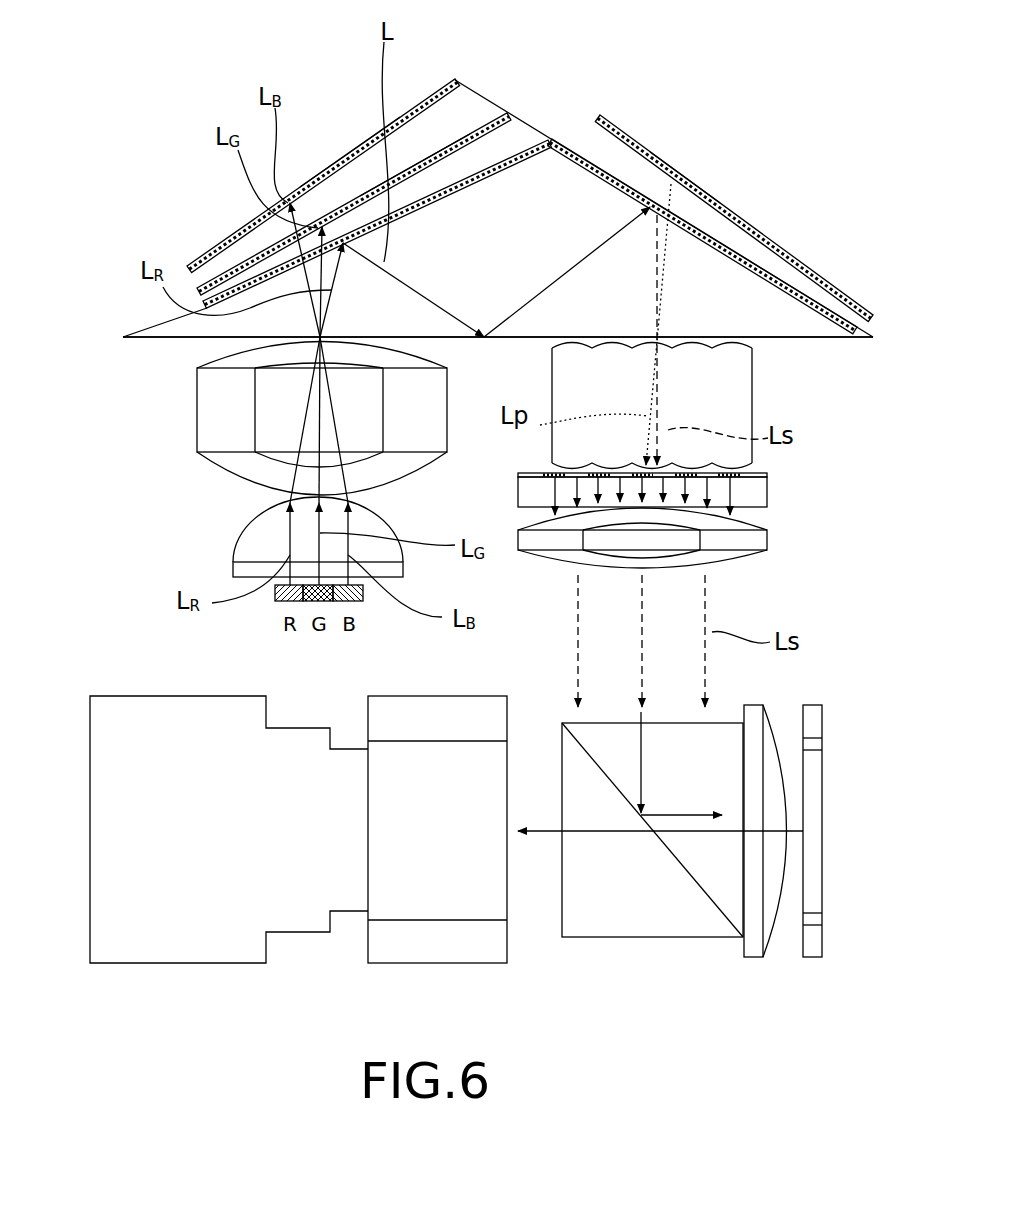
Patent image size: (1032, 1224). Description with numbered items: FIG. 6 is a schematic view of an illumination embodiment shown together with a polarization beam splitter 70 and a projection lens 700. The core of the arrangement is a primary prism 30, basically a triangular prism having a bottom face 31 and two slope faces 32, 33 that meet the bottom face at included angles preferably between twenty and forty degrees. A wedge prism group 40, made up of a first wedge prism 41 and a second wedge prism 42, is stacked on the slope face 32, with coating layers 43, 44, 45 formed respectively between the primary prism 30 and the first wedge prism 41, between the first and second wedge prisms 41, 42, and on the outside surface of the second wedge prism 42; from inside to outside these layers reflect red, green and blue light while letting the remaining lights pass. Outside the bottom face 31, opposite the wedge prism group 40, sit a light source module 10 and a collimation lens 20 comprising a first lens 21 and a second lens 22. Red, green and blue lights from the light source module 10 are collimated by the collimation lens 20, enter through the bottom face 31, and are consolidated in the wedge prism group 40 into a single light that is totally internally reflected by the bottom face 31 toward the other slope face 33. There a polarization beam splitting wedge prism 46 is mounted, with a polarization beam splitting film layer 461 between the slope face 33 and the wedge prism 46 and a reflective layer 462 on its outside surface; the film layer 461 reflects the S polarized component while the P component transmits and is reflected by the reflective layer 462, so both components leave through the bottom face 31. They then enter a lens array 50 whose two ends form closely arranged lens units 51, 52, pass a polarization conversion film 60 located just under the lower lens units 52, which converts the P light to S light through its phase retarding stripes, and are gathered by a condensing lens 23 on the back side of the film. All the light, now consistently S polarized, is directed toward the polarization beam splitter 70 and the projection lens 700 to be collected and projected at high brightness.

The light source module 10 is at (268, 615).
The collimation lens 20 is at (254, 460).
The first lens 21 is at (262, 537).
The second lens 22 is at (215, 404).
The condensing lens 23 is at (757, 540).
The primary prism 30 is at (474, 233).
The bottom face 31 is at (837, 338).
The slope face 32 is at (160, 316).
The slope face 33 is at (833, 308).
The wedge prism group 40 is at (521, 195).
The first wedge prism 41 is at (422, 158).
The second wedge prism 42 is at (370, 135).
The coating layer 43 is at (215, 292).
The coating layer 44 is at (247, 257).
The coating layer 45 is at (327, 175).
The polarization beam splitting wedge prism 46 is at (613, 138).
The polarization beam splitting film layer 461 is at (748, 262).
The reflective layer 462 is at (678, 185).
The lens array 50 is at (689, 406).
The lens units 51 is at (745, 347).
The lens units 52 is at (760, 466).
The polarization conversion film 60 is at (757, 490).
The polarization beam splitter 70 is at (657, 937).
The projection lens 700 is at (205, 952).